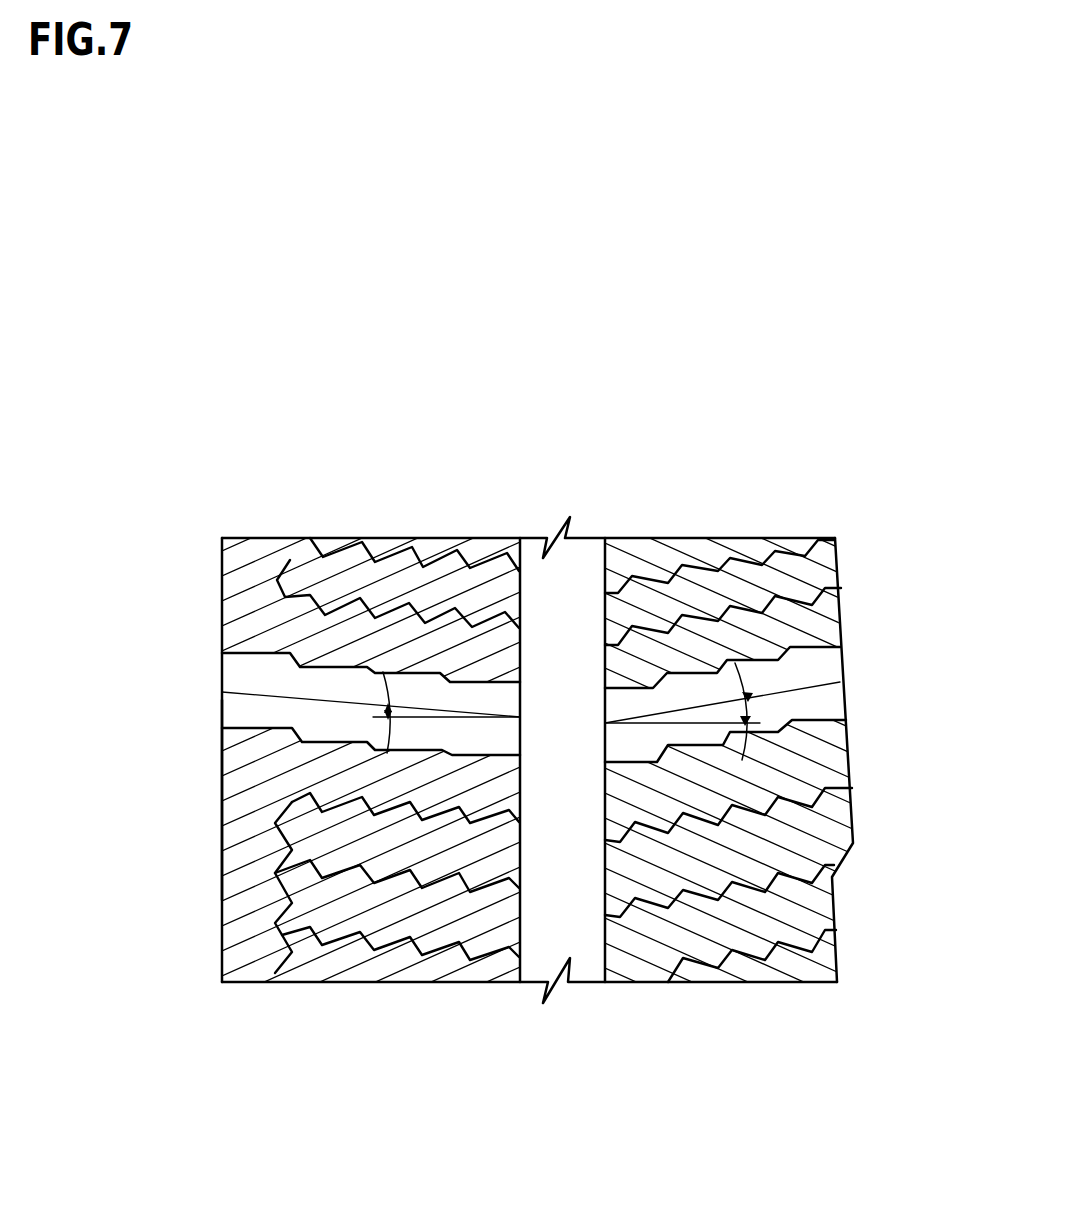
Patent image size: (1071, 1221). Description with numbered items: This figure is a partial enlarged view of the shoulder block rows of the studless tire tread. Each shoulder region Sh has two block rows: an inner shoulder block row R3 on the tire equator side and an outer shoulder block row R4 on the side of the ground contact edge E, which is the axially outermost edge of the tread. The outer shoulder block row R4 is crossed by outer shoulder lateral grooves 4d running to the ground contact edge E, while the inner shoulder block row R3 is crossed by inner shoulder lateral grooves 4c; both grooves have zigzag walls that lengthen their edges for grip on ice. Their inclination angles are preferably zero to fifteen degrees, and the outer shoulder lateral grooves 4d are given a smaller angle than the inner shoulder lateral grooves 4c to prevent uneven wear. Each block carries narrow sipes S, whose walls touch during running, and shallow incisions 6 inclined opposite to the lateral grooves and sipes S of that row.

The incisions 6 is at (235, 548).
The outer shoulder lateral grooves 4d is at (235, 677).
The inner shoulder lateral grooves 4c is at (818, 663).
The ground contact edge E is at (222, 813).
The sipe S is at (770, 607).
The outer shoulder block row R4 is at (405, 513).
The inner shoulder block row R3 is at (723, 515).